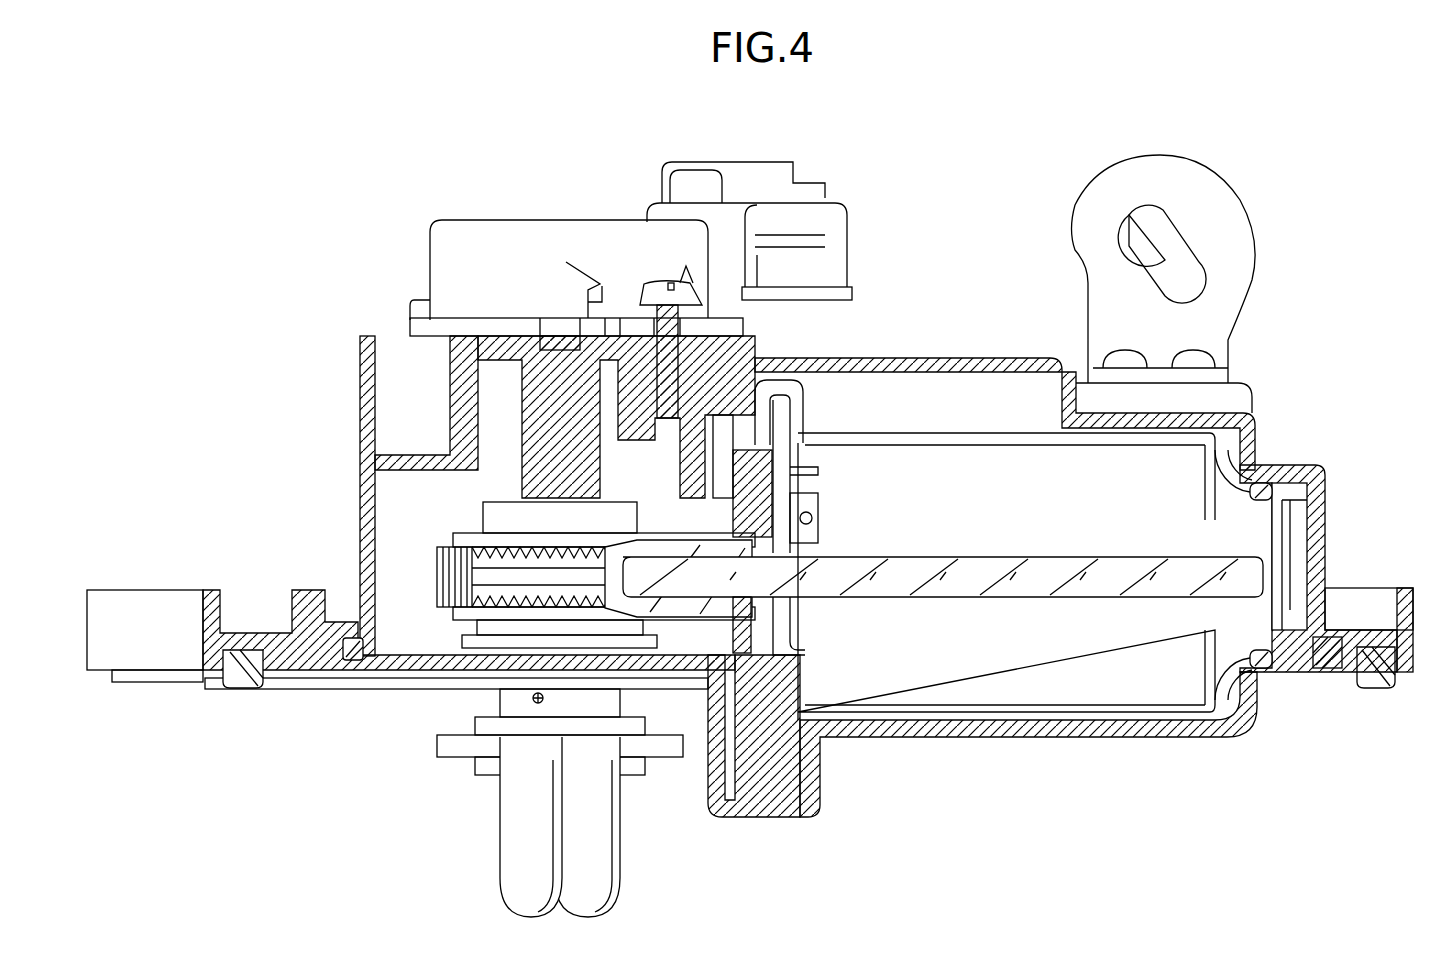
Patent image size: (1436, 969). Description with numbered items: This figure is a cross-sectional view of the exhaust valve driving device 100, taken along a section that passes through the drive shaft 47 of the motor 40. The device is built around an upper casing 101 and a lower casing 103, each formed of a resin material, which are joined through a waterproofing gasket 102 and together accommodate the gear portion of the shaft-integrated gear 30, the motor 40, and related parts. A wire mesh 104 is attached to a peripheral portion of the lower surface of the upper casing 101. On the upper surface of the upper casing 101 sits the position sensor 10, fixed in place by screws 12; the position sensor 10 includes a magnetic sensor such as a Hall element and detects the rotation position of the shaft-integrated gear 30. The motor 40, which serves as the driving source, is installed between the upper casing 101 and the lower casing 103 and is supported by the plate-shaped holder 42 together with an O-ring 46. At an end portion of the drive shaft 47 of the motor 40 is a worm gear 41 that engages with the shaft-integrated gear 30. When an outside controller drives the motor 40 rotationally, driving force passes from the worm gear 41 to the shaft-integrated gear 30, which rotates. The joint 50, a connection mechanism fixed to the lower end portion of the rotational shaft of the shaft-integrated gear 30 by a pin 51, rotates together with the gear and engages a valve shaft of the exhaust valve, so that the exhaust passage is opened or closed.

The exhaust valve driving device 100 is at (137, 174).
The position sensor 10 is at (493, 220).
The screw 12 is at (690, 320).
The upper casing 101 is at (360, 495).
The gasket 102 is at (352, 660).
The wire mesh 104 is at (245, 688).
The worm gear 41 is at (490, 550).
The shaft-integrated gear 30 is at (437, 575).
The drive shaft 47 is at (960, 575).
The motor 40 is at (948, 432).
The O-ring 46 is at (1268, 488).
The holder 42 is at (757, 825).
The lower casing 103 is at (1022, 737).
The joint 50 is at (498, 825).
The pin 51 is at (530, 698).